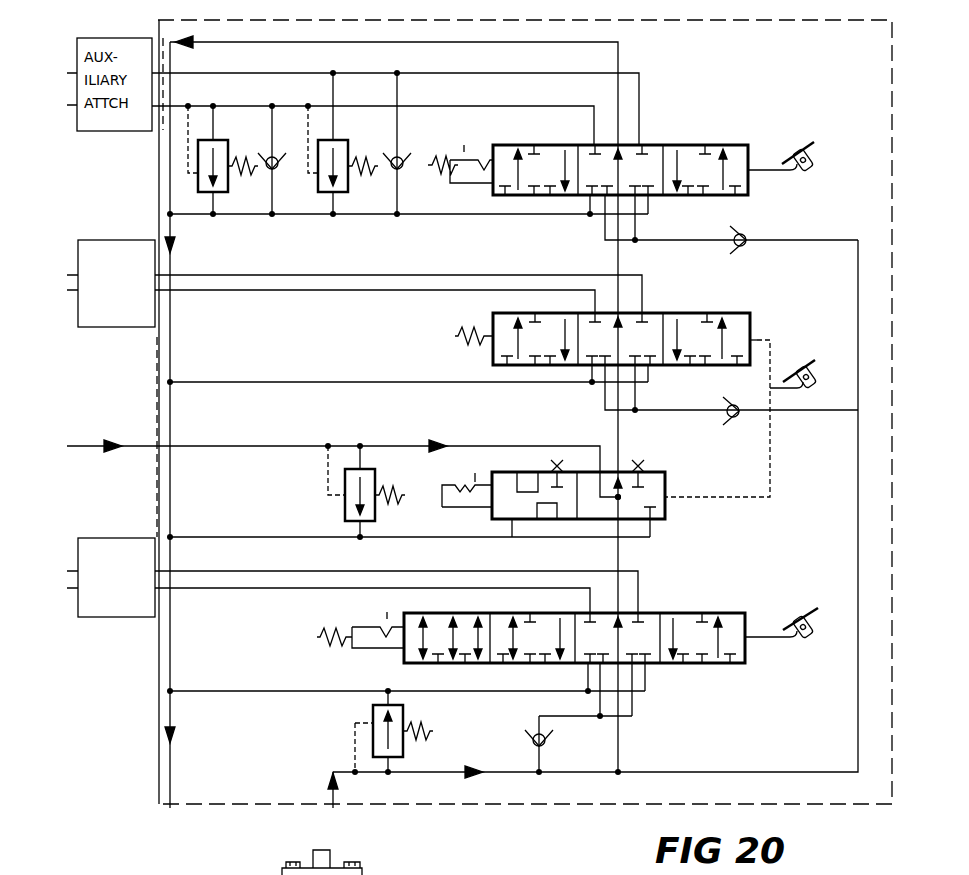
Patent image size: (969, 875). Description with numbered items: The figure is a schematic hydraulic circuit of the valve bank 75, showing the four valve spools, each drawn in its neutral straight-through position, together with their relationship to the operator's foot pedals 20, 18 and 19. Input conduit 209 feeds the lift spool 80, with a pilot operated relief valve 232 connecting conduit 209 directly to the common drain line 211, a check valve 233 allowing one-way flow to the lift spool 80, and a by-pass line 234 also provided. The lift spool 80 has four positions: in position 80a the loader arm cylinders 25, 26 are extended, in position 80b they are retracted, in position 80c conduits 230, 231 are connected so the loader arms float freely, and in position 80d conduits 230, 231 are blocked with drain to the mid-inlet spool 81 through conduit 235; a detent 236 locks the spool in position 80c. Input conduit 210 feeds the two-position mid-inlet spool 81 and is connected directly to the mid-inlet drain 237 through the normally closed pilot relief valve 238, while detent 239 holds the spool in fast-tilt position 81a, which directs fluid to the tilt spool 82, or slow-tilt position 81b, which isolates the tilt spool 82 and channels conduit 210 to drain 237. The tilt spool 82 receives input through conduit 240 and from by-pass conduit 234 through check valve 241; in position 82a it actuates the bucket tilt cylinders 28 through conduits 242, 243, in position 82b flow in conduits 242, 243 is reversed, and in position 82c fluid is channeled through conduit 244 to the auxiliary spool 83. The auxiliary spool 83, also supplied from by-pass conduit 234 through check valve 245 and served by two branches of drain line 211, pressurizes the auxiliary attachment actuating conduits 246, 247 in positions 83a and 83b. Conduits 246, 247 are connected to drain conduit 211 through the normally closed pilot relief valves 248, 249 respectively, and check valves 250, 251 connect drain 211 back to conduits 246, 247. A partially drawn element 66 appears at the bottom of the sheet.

The valve bank 75 is at (158, 200).
The bucket tilt cylinders 28 is at (114, 330).
The loader arm cylinder 25 is at (111, 600).
The loader arm cylinder 26 is at (104, 628).
The common drain line 211 is at (622, 50).
The auxiliary attachment actuating conduit 246 is at (641, 83).
The auxiliary attachment actuating conduit 247 is at (507, 108).
The pilot relief valve 249 is at (216, 139).
The pilot relief valve 248 is at (338, 139).
The check valve 251 is at (289, 175).
The check valve 250 is at (402, 156).
The auxiliary spool 83 is at (602, 155).
The auxiliary spool position 83a is at (693, 144).
The auxiliary spool position 83b is at (552, 144).
The operator's foot pedal 19 is at (806, 142).
The conduit 244 is at (622, 262).
The check valve 245 is at (747, 250).
The by-pass line 234 is at (797, 772).
The conduit 243 is at (248, 273).
The conduit 242 is at (293, 291).
The tilt spool 82 is at (632, 393).
The tilt spool position 82a is at (693, 366).
The tilt spool position 82b is at (531, 366).
The tilt spool position 82c is at (640, 313).
The operator's foot pedal 18 is at (808, 362).
The check valve 241 is at (728, 420).
The conduit 240 is at (621, 437).
The input conduit 210 is at (231, 449).
The pilot relief valve 238 is at (345, 512).
The detent 239 is at (486, 511).
The mid-inlet drain 237 is at (392, 540).
The mid-inlet spool 81 is at (619, 515).
The mid-inlet spool position 81a is at (662, 520).
The mid-inlet spool position 81b is at (512, 540).
The conduit 235 is at (621, 559).
The conduit 231 is at (256, 568).
The conduit 230 is at (248, 589).
The detent 236 is at (365, 651).
The lift spool 80 is at (591, 638).
The lift spool position 80a is at (735, 665).
The lift spool position 80b is at (540, 665).
The lift spool position 80c is at (434, 665).
The lift spool position 80d is at (610, 666).
The operator's foot pedal 20 is at (810, 608).
The check valve 233 is at (546, 747).
The pilot operated relief valve 232 is at (373, 714).
The input conduit 209 is at (621, 757).
The pump 66 is at (509, 874).